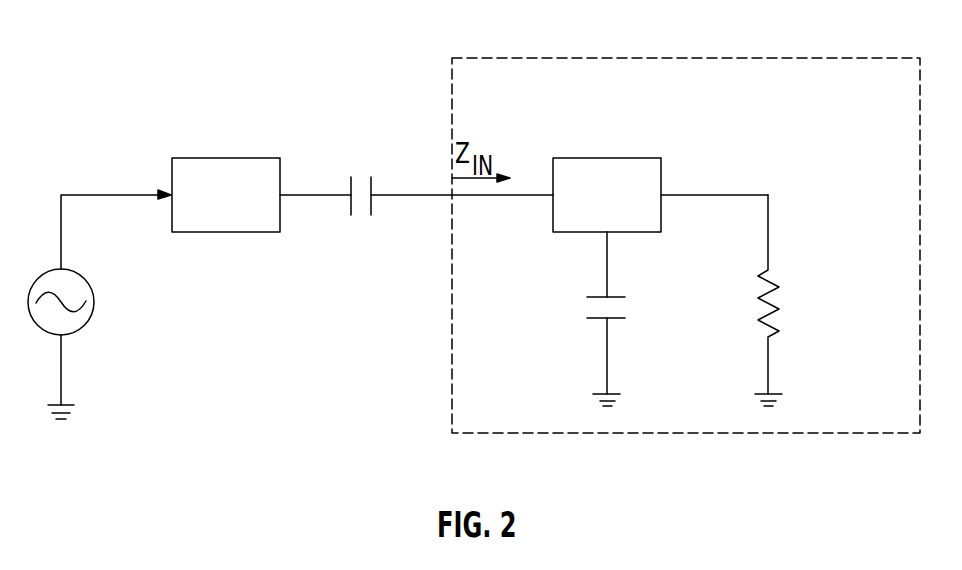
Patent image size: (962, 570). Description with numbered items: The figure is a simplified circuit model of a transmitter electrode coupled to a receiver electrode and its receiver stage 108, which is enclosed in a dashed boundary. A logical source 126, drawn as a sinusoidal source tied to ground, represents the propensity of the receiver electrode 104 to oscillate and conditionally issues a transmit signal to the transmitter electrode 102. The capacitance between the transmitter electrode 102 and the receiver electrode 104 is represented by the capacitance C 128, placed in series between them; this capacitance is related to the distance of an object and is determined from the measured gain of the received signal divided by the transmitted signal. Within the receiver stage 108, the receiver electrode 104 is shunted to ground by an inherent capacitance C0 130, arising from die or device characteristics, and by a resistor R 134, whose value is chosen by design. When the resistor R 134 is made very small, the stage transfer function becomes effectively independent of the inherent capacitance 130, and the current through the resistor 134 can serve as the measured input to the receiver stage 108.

The transmitter electrode 102 is at (235, 138).
The receiver electrode 104 is at (615, 138).
The receiver stage 108 is at (865, 38).
The logical source 126 is at (115, 258).
The capacitance C 128 is at (342, 248).
The inherent capacitance C0 130 is at (588, 305).
The resistor R 134 is at (812, 263).